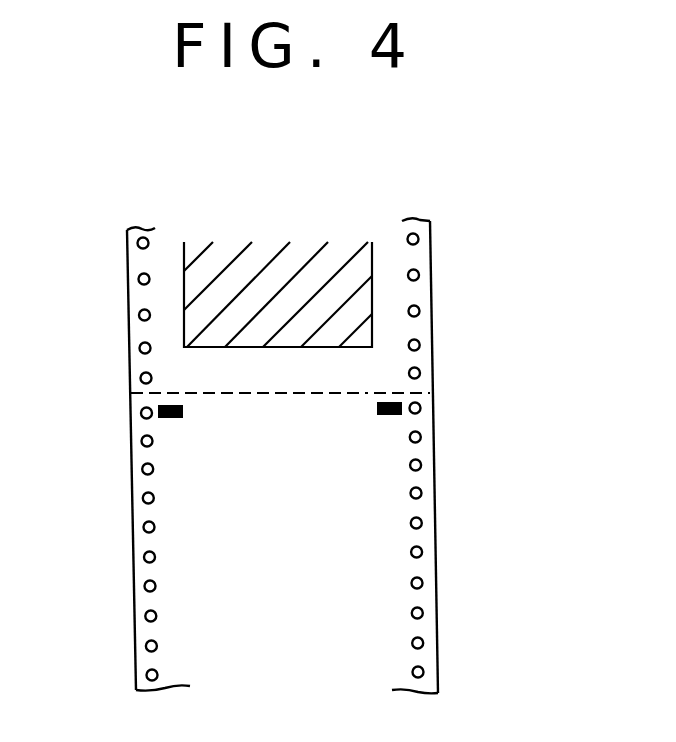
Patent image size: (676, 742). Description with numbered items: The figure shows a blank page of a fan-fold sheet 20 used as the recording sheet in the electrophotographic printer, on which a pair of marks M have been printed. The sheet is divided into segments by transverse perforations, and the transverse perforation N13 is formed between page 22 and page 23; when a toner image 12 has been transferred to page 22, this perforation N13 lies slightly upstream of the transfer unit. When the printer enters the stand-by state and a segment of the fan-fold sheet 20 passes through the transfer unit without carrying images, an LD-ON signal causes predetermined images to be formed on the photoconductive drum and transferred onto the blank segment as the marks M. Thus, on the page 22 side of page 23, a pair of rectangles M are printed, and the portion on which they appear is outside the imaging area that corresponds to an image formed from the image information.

The toner image 12 is at (197, 293).
The fan-fold sheet 20 is at (126, 360).
The page 22 is at (413, 292).
The page 23 is at (387, 567).
The transverse perforation N13 is at (365, 393).
The marks M is at (172, 419).